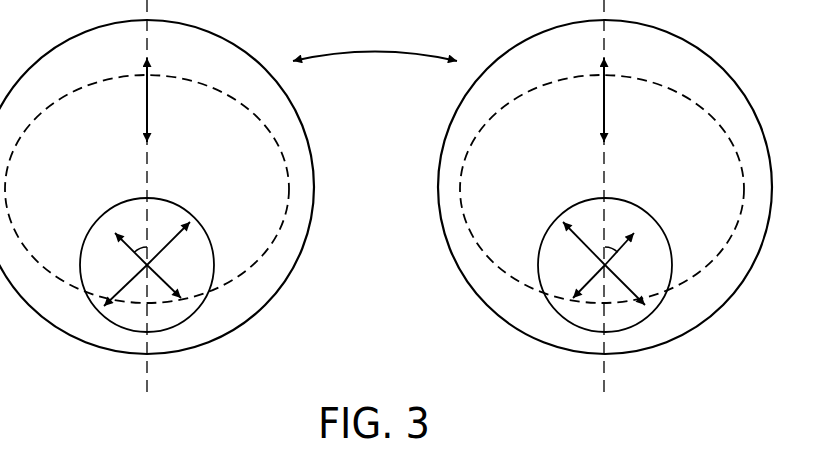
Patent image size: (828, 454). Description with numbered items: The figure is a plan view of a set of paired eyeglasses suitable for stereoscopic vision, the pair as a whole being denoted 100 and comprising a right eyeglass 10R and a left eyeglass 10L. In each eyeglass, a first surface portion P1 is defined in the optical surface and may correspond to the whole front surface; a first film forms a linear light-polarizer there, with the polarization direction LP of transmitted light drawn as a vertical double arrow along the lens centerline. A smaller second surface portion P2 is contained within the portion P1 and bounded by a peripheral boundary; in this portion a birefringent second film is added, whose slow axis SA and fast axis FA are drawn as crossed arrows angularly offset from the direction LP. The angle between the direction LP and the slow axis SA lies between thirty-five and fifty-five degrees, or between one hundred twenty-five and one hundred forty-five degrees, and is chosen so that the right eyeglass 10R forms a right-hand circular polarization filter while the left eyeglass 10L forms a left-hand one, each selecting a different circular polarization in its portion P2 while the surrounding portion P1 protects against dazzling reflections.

The eyeglass pair 100 is at (377, 46).
The right eyeglass 10R is at (288, 312).
The left eyeglass 10L is at (468, 308).
The polarization direction LP is at (168, 92).
The first surface portion P1 is at (247, 138).
The second surface portion P2 is at (113, 273).
The fast axis FA is at (157, 256).
The slow axis SA is at (152, 276).